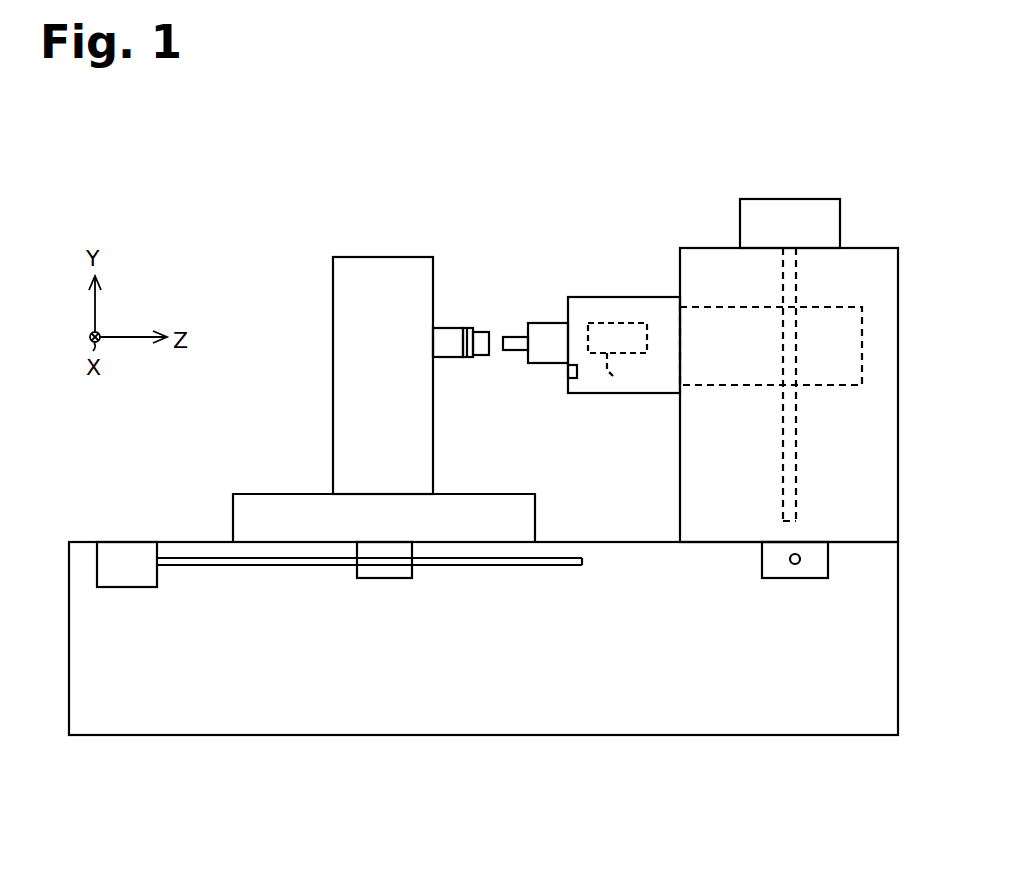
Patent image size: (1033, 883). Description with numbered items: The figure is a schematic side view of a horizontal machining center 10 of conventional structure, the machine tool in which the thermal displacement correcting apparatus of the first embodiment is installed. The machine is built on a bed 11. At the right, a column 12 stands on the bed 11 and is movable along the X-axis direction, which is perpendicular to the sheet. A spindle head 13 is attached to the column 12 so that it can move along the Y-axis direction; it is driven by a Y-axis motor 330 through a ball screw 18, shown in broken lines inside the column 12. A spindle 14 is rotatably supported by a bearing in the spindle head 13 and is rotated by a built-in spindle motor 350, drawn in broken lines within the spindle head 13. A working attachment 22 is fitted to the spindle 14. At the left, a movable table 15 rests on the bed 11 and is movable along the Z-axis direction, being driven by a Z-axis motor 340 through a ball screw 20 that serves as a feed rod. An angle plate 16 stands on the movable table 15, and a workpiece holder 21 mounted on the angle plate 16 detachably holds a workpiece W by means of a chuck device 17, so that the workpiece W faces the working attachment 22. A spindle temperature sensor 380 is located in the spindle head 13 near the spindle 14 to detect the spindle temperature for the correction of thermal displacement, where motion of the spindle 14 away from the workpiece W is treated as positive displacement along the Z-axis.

The horizontal machining center 10 is at (322, 196).
The bed 11 is at (536, 722).
The column 12 is at (684, 492).
The spindle head 13 is at (601, 301).
The spindle 14 is at (548, 323).
The movable table 15 is at (538, 508).
The angle plate 16 is at (333, 400).
The chuck device 17 is at (466, 328).
The workpiece W is at (480, 337).
The ball screw 18 is at (780, 353).
The ball screw 20 is at (258, 568).
The workpiece holder 21 is at (452, 357).
The working attachment 22 is at (516, 337).
The Y-axis motor 330 is at (789, 205).
The Z-axis motor 340 is at (128, 582).
The spindle motor 350 is at (628, 356).
The spindle temperature sensor 380 is at (573, 379).